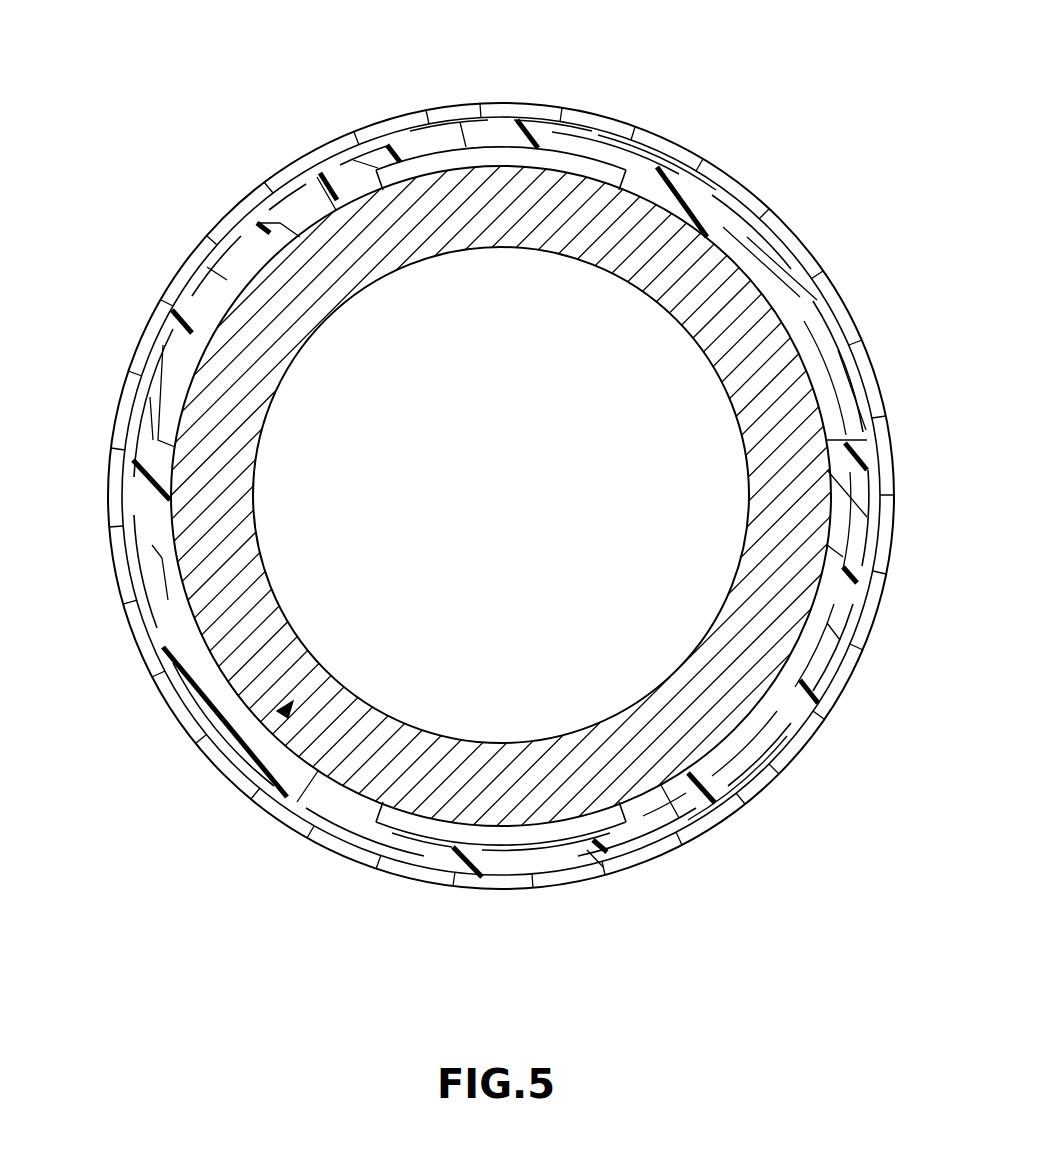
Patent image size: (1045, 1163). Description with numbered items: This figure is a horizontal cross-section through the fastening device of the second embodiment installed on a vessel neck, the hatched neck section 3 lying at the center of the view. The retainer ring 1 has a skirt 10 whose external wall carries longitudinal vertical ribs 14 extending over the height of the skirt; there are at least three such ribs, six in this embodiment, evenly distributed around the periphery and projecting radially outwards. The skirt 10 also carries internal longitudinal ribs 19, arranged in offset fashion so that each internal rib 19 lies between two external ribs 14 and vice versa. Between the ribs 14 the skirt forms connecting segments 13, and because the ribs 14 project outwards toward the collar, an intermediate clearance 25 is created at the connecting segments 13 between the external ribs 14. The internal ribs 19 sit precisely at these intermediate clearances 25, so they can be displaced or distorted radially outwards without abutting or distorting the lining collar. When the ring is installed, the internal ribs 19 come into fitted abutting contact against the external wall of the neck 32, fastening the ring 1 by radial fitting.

The retainer ring 1 is at (782, 280).
The hatched annular body 3 is at (245, 750).
The skirt 10 is at (752, 233).
The connecting segments 13 is at (605, 868).
The longitudinal vertical ribs 14 is at (497, 120).
The internal longitudinal ribs 19 is at (334, 200).
The intermediate clearance 25 is at (640, 140).
The external wall of neck 32 is at (163, 648).